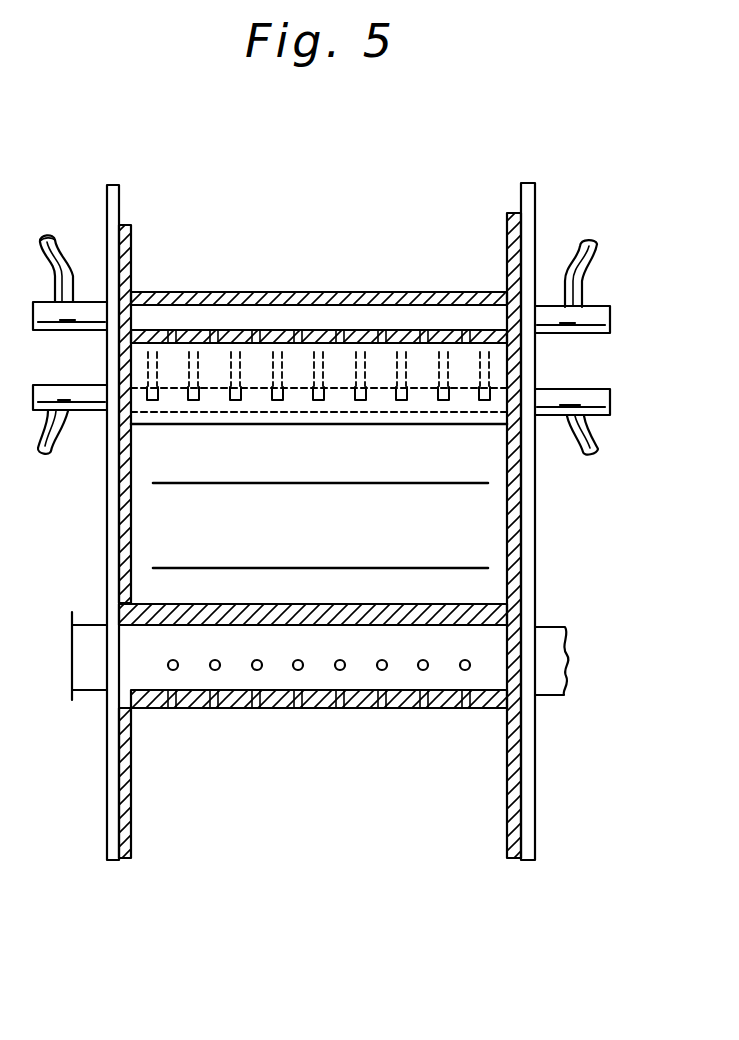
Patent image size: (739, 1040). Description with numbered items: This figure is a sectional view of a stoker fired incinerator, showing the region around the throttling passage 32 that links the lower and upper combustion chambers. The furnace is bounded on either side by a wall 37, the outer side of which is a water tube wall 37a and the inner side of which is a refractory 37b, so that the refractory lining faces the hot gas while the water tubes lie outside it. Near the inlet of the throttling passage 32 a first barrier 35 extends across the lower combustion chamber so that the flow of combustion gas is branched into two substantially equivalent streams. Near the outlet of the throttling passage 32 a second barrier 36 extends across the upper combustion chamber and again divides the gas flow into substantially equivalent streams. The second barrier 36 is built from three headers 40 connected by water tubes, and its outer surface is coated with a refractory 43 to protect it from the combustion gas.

The throttling passage 32 is at (490, 521).
The first barrier 35 is at (500, 648).
The second barrier 36 is at (357, 292).
The wall 37 is at (538, 771).
The water tube wall 37a is at (527, 721).
The refractory 37b is at (512, 786).
The header 40 is at (289, 318).
The refractory 43 is at (190, 303).